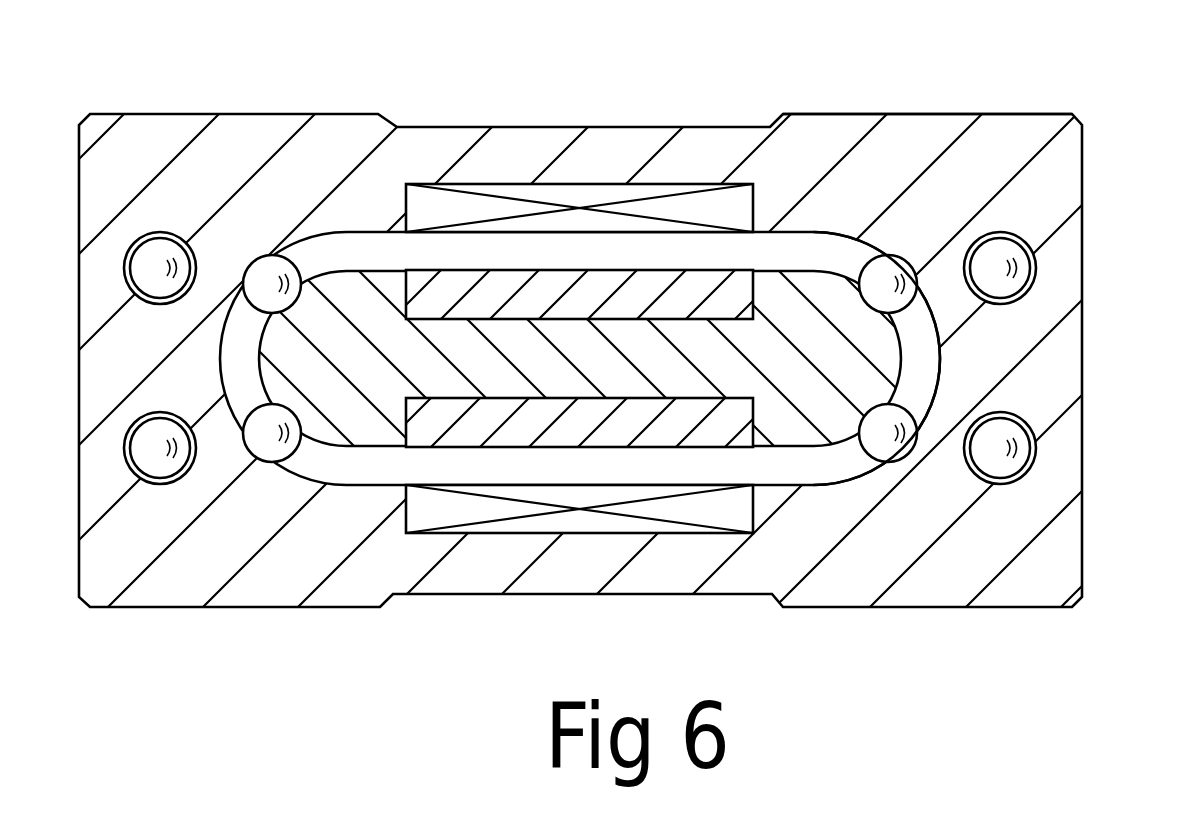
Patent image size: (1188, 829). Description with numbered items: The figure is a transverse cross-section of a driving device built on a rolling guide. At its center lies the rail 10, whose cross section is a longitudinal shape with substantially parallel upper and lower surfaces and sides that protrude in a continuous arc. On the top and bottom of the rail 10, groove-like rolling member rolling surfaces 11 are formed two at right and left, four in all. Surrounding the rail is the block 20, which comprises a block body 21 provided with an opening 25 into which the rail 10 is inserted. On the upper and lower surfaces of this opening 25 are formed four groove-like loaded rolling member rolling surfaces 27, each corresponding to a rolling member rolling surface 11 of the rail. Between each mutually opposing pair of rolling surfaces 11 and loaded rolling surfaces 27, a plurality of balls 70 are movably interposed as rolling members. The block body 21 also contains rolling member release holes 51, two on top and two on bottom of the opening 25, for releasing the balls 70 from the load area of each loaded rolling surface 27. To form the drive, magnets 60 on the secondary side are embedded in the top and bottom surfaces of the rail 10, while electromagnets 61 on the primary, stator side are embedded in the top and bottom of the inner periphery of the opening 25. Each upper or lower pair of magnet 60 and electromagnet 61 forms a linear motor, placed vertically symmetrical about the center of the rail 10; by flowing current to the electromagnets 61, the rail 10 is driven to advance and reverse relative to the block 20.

The rail 10 is at (813, 450).
The rolling member rolling surface 11 is at (853, 290).
The block 20 is at (866, 112).
The block body 21 is at (912, 127).
The opening 25 is at (331, 247).
The loaded rolling member rolling surface 27 is at (887, 254).
The rolling member release hole 51 is at (1037, 257).
The magnet 60 is at (597, 288).
The electromagnet 61 is at (547, 190).
The ball 70 is at (1003, 288).